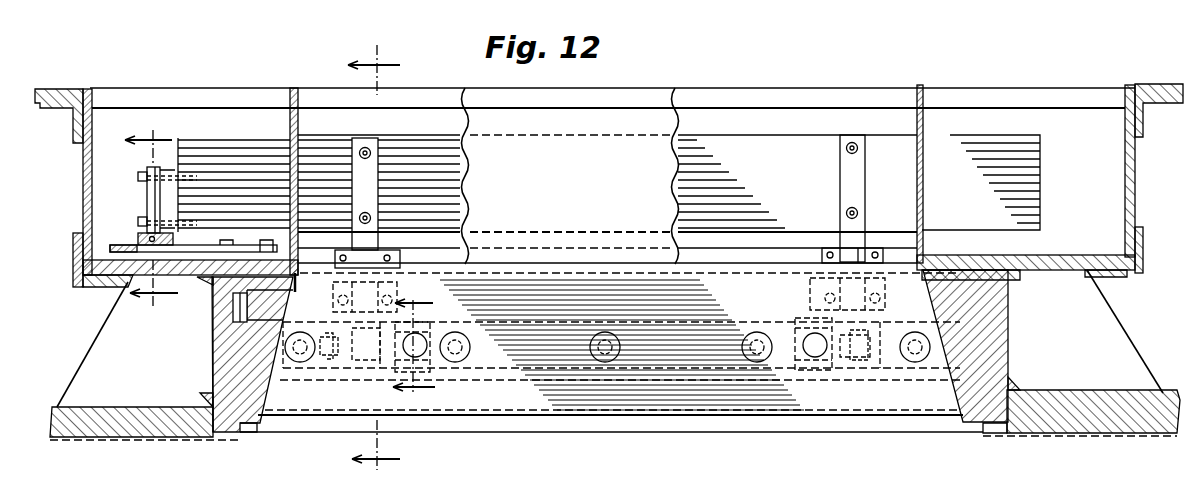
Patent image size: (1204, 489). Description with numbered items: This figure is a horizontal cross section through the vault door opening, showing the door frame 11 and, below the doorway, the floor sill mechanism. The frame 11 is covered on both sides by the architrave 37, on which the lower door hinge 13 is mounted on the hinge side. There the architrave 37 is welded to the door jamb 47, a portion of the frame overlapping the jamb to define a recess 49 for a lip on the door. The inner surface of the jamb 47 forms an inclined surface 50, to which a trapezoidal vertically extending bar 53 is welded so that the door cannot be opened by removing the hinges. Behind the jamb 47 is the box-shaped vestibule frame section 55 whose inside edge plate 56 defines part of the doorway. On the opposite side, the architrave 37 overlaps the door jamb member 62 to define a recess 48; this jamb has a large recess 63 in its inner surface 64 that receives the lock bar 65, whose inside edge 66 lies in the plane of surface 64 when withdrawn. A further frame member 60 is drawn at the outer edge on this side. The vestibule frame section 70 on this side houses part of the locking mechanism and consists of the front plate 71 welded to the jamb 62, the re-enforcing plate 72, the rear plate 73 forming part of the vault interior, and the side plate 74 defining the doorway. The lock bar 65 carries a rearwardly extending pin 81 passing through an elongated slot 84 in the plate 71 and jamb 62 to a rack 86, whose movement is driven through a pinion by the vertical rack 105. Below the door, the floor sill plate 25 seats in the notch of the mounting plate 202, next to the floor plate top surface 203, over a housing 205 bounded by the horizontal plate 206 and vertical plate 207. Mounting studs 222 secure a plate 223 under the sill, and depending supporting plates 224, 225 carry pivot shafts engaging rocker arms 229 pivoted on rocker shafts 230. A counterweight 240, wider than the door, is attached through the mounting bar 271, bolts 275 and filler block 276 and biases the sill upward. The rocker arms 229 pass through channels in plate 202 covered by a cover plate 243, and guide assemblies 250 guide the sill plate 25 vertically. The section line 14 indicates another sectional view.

The door frame 11 is at (90, 370).
The lower door hinge 13 is at (268, 261).
The section line 14- 14 is at (424, 344).
The floor sill plate 25 is at (537, 412).
The architrave 37 is at (200, 441).
The door jamb 47 is at (1005, 336).
The recess 48 is at (250, 440).
The recess 49 is at (978, 434).
The inclined surface 50 is at (958, 400).
The vertically extending bar 53 is at (942, 272).
The vestibule frame section 55 is at (1143, 187).
The inside edge plate 56 is at (923, 184).
The left foot 60 is at (133, 410).
The door jamb member 62 is at (225, 378).
The recess 63 is at (208, 345).
The inner surface 64 is at (265, 396).
The lock bar 65 is at (243, 318).
The inside edge 66 is at (290, 310).
The vestibule frame section 70 is at (70, 188).
The front plate 71 is at (118, 283).
The re-enforcing plate 72 is at (83, 173).
The rear plate 73 is at (180, 89).
The side plate 74 is at (298, 128).
The rearwardly extending pin 81 is at (297, 287).
The elongated slot 84 is at (193, 248).
The rack 86 is at (247, 256).
The vertical rack 105 is at (138, 240).
The mounting plate 202 is at (785, 257).
The top surface 203 is at (488, 176).
The housing 205 is at (775, 129).
The horizontal plate 206 is at (1026, 192).
The vertical plate 207 is at (733, 95).
The mounting studs 222 is at (466, 353).
The plate 223 is at (528, 385).
The depending supporting plate 224 is at (621, 339).
The depending supporting plate 225 is at (886, 380).
The rocker arm 229 is at (372, 162).
The rocker shaft 230 is at (404, 258).
The counterweight 240 is at (950, 142).
The cover plate 243 is at (860, 258).
The guide assembly 250 is at (430, 322).
The mounting bar 271 is at (153, 203).
The bolts 275 is at (147, 172).
The filler block 276 is at (168, 193).